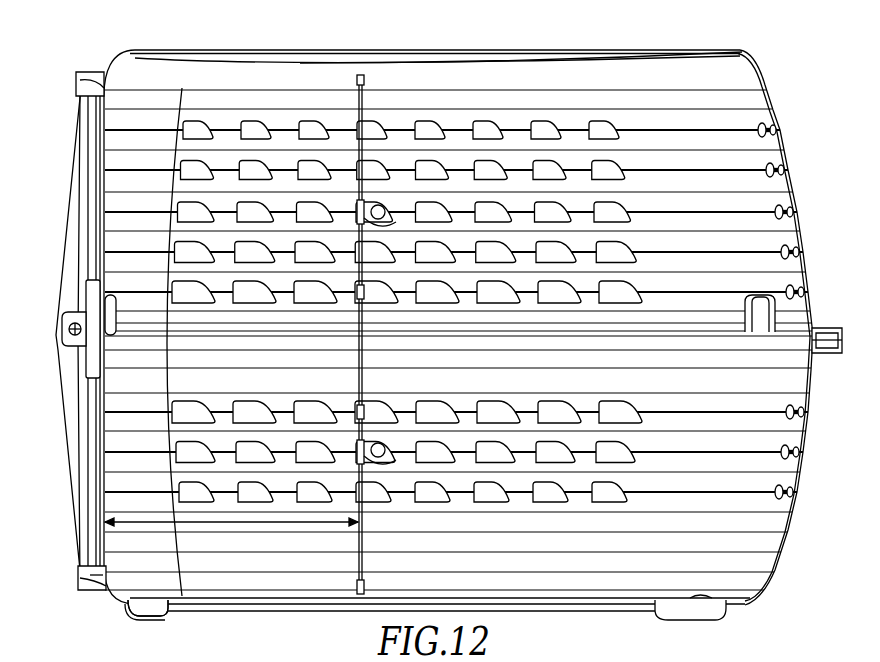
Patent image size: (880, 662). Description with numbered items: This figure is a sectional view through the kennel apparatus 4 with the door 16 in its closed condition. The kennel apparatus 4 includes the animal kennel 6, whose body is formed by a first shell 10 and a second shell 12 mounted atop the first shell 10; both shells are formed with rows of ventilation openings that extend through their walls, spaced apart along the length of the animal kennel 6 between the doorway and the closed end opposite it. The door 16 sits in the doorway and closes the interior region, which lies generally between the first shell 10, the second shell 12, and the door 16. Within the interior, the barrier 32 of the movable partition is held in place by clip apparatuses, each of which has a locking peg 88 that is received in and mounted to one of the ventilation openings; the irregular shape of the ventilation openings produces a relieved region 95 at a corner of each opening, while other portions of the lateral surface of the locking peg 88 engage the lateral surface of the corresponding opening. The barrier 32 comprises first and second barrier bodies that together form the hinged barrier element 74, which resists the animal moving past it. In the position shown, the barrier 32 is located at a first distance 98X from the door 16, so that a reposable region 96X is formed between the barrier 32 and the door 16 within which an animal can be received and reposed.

The kennel apparatus 4 is at (718, 51).
The animal kennel 6 is at (771, 67).
The second shell 12 is at (802, 212).
The first shell 10 is at (798, 468).
The door 16 is at (82, 484).
The relieved region 95 is at (386, 214).
The locking peg 88 is at (386, 223).
The barrier 32 is at (364, 549).
The hinged barrier element 74 is at (365, 566).
The first distance 98X is at (262, 524).
The reposable region 96X is at (190, 582).